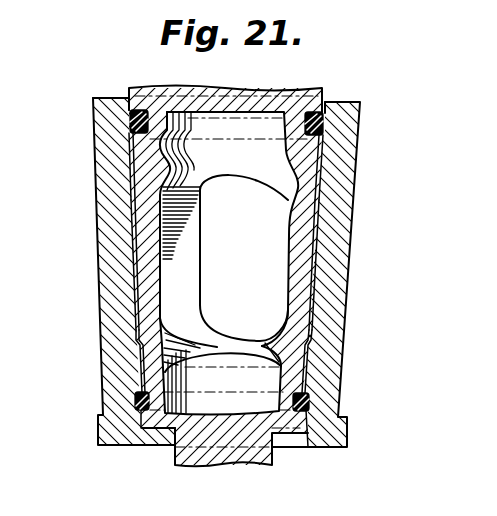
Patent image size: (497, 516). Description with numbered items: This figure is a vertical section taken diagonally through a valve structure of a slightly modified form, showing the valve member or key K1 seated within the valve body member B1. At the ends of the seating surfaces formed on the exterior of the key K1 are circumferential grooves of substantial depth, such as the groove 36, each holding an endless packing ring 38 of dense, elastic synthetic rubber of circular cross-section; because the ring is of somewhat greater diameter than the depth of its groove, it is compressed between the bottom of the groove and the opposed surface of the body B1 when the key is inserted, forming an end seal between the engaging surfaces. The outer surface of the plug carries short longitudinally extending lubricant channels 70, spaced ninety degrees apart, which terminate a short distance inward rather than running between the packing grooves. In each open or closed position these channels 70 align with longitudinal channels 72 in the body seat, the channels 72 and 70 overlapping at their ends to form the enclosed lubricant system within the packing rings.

The die insert core K1 is at (301, 80).
The die holder ring B1 is at (362, 108).
The circumferential groove 36 is at (135, 140).
The packing ring 38 is at (318, 378).
The lubricant channel 70 is at (135, 157).
The longitudinal channel 72 is at (135, 260).